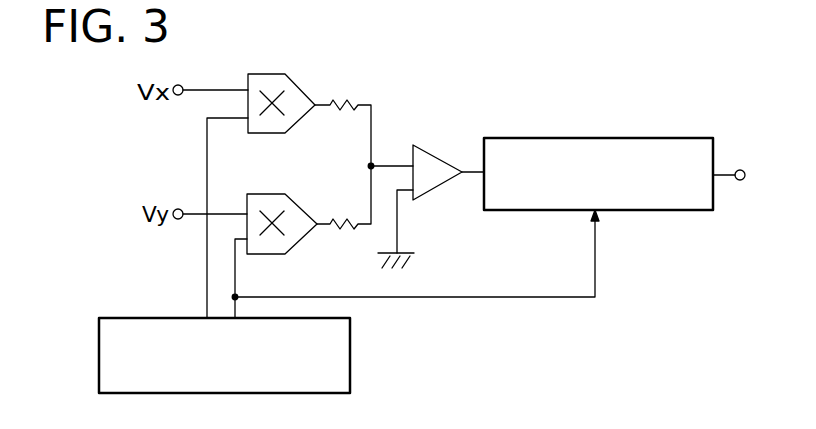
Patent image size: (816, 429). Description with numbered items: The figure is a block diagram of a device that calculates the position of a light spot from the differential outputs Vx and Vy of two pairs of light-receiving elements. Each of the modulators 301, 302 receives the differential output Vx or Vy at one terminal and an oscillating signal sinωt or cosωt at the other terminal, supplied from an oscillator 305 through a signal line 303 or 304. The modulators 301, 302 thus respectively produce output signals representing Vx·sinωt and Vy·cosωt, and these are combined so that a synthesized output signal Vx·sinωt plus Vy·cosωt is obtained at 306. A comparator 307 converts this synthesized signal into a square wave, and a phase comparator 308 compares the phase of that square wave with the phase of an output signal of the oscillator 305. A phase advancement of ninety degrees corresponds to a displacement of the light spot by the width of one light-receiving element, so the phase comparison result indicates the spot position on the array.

The modulator 301 is at (287, 78).
The modulator 302 is at (281, 194).
The signal line 303 is at (205, 277).
The signal line 304 is at (238, 298).
The oscillator 305 is at (351, 356).
The synthesized output signal point 306 is at (373, 165).
The comparator 307 is at (444, 186).
The phase comparator 308 is at (598, 138).